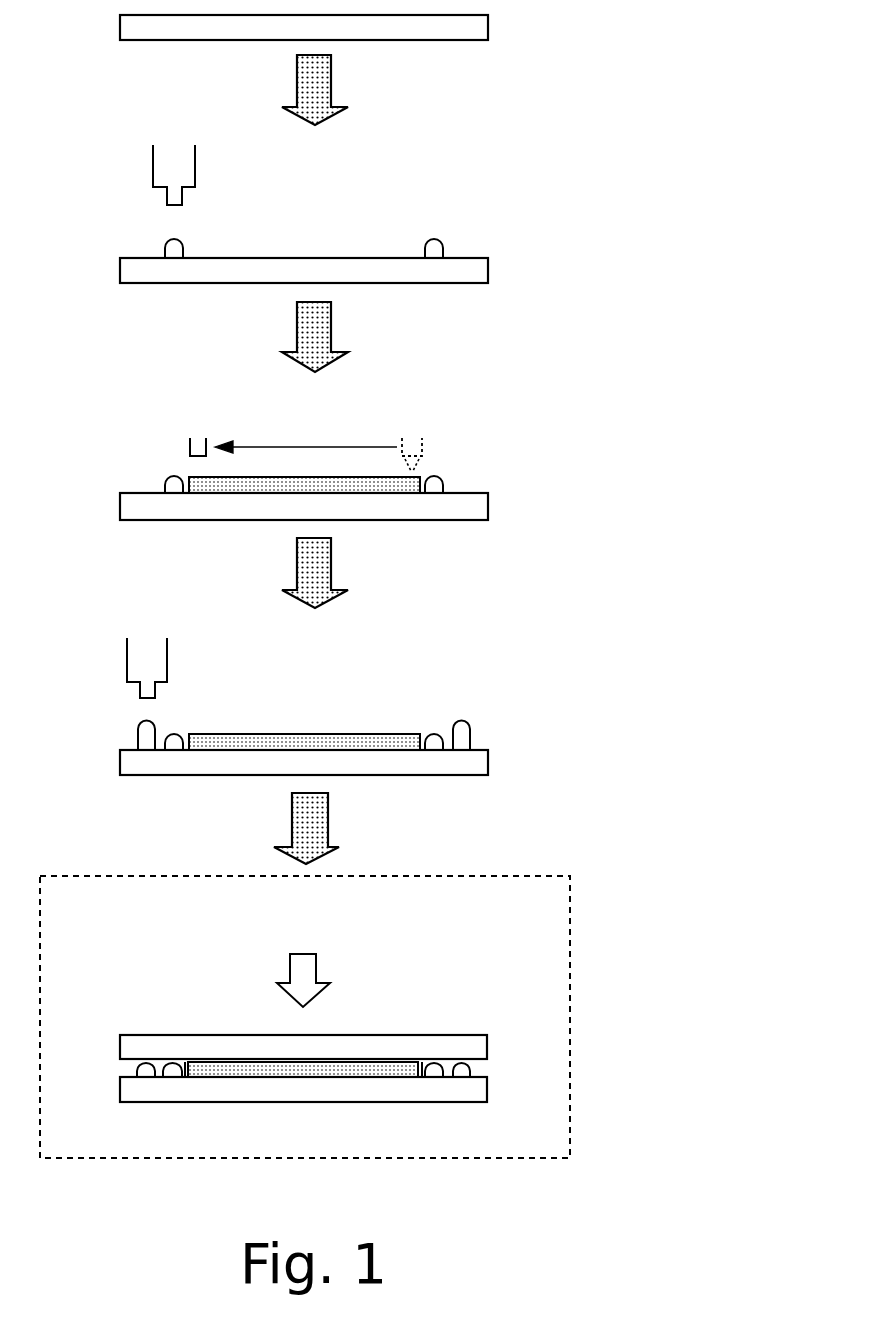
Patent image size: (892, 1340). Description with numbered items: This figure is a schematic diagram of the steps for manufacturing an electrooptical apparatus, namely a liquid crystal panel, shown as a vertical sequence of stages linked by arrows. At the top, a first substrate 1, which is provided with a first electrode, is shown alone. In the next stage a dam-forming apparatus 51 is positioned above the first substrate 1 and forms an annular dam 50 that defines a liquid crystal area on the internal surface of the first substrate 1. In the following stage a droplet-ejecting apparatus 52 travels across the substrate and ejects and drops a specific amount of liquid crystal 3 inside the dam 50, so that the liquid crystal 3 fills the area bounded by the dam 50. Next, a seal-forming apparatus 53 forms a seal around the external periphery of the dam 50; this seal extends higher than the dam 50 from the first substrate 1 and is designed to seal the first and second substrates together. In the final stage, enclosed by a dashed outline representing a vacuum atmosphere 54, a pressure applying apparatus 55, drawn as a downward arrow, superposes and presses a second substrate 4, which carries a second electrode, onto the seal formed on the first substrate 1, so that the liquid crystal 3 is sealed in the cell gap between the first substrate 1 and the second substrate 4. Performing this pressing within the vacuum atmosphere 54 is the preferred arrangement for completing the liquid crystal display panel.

The first substrate 1 is at (488, 28).
The liquid crystal 3 is at (366, 483).
The second substrate 4 is at (487, 1047).
The dam 50 is at (437, 250).
The dam-forming apparatus 51 is at (189, 165).
The droplet-ejecting apparatus 52 is at (188, 445).
The seal-forming apparatus 53 is at (162, 655).
The vacuum atmosphere 54 is at (571, 1013).
The pressure applying apparatus 55 is at (310, 962).